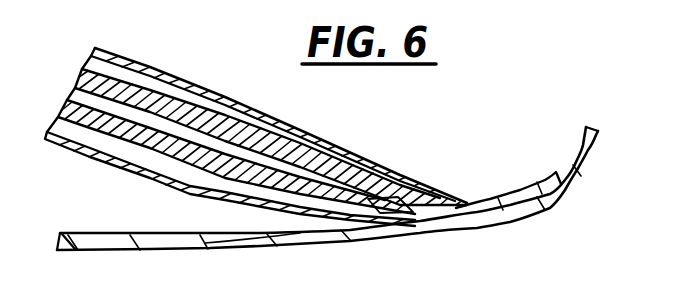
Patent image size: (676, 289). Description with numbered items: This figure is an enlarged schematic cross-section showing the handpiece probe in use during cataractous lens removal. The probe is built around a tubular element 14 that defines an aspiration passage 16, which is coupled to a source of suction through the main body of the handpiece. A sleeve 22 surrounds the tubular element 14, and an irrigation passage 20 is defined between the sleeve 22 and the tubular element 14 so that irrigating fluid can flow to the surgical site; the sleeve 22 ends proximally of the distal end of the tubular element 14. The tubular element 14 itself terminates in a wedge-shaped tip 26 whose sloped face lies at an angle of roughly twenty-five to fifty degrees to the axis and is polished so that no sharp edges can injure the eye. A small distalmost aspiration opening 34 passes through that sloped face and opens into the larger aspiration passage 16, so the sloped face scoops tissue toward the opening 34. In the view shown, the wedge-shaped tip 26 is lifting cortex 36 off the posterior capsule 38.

The tubular element 14 is at (97, 147).
The aspiration passage 16 is at (163, 131).
The irrigation passage 20 is at (137, 77).
The sleeve 22 is at (215, 63).
The wedge-shaped tip 26 is at (417, 169).
The aspiration opening 34 is at (409, 205).
The cortex 36 is at (508, 196).
The posterior capsule 38 is at (538, 199).